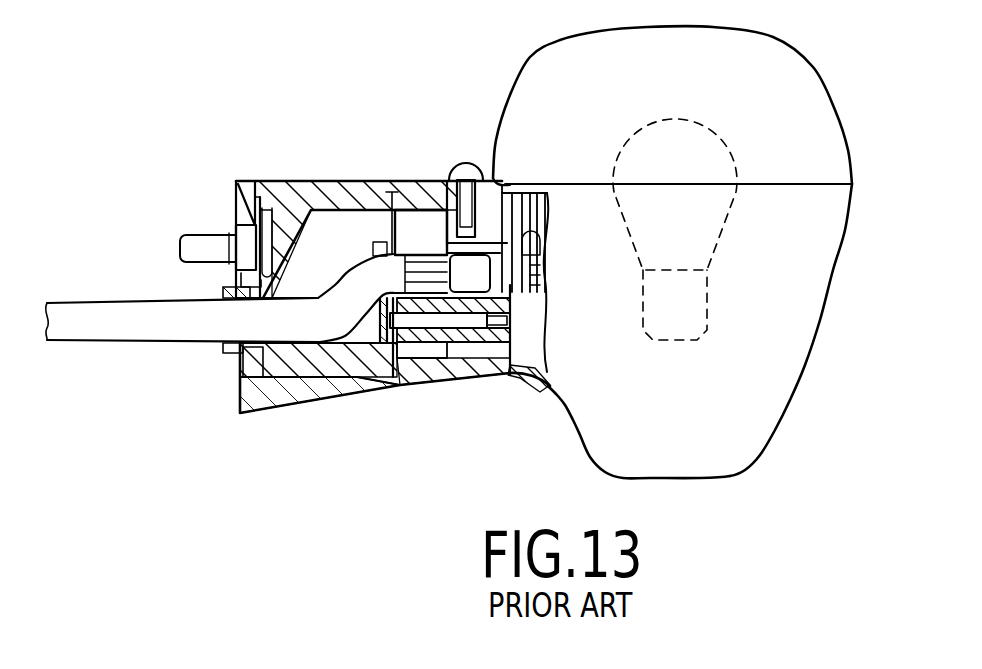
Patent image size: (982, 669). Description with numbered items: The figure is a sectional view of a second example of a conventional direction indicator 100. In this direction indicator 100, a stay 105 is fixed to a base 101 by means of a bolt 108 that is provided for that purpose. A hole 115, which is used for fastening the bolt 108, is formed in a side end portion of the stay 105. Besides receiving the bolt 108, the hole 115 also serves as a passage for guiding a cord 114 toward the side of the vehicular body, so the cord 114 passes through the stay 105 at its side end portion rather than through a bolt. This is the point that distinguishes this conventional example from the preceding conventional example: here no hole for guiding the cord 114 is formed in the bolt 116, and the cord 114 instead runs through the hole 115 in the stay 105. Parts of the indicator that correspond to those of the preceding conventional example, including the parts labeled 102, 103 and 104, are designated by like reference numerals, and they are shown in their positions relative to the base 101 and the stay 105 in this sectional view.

The direction indicator 100 is at (418, 110).
The base 101 is at (716, 456).
The lens 102 is at (815, 108).
The lamp housing 103 is at (808, 408).
The bulb 104 is at (680, 115).
The stay 105 is at (333, 392).
The bolt 108 is at (460, 317).
The cord 114 is at (333, 292).
The hole 115 is at (222, 342).
The bolt 116 is at (202, 248).